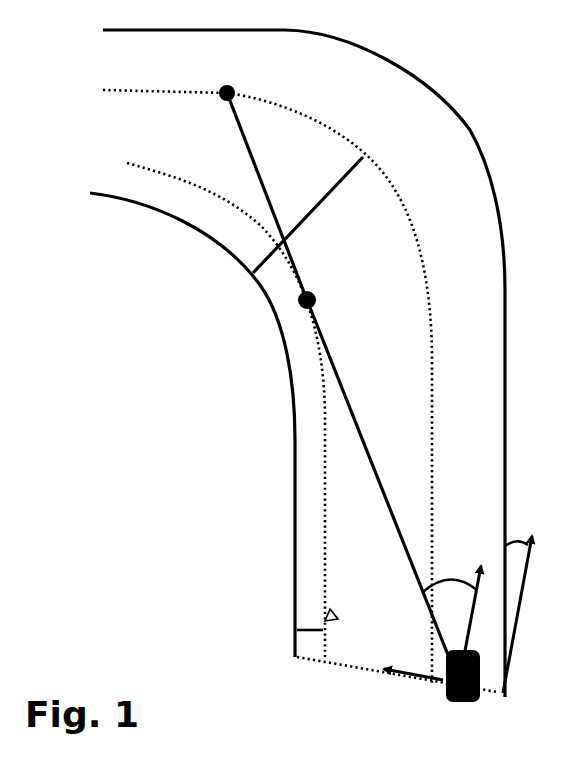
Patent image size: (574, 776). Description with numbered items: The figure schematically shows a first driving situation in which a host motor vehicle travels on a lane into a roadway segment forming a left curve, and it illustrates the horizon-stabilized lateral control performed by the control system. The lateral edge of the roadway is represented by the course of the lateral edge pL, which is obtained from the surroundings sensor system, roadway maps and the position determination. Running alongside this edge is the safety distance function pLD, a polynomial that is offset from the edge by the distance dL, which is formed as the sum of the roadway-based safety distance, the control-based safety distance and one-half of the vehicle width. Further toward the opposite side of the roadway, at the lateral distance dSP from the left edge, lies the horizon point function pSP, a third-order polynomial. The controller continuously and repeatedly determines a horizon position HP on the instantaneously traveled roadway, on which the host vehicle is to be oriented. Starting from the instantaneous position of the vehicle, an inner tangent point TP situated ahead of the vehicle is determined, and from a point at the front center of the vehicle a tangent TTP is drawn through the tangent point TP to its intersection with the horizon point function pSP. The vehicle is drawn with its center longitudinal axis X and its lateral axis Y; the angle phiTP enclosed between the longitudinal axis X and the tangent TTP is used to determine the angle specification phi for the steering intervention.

The horizon position HP is at (263, 178).
The inner tangent point TP is at (329, 292).
The lateral distance dSP is at (308, 215).
The horizon point function pSP is at (284, 386).
The tangent TTP is at (377, 477).
The course of the lateral edge of the roadway pL is at (192, 425).
The safety distance function pLD is at (266, 410).
The distance dDelta dL is at (317, 613).
The center longitudinal axis of the host vehicle X is at (469, 605).
The lateral axis of the host vehicle Y is at (408, 687).
The angle specification for the steering intervention phi is at (517, 596).
The angle PHITP phiTP is at (450, 597).